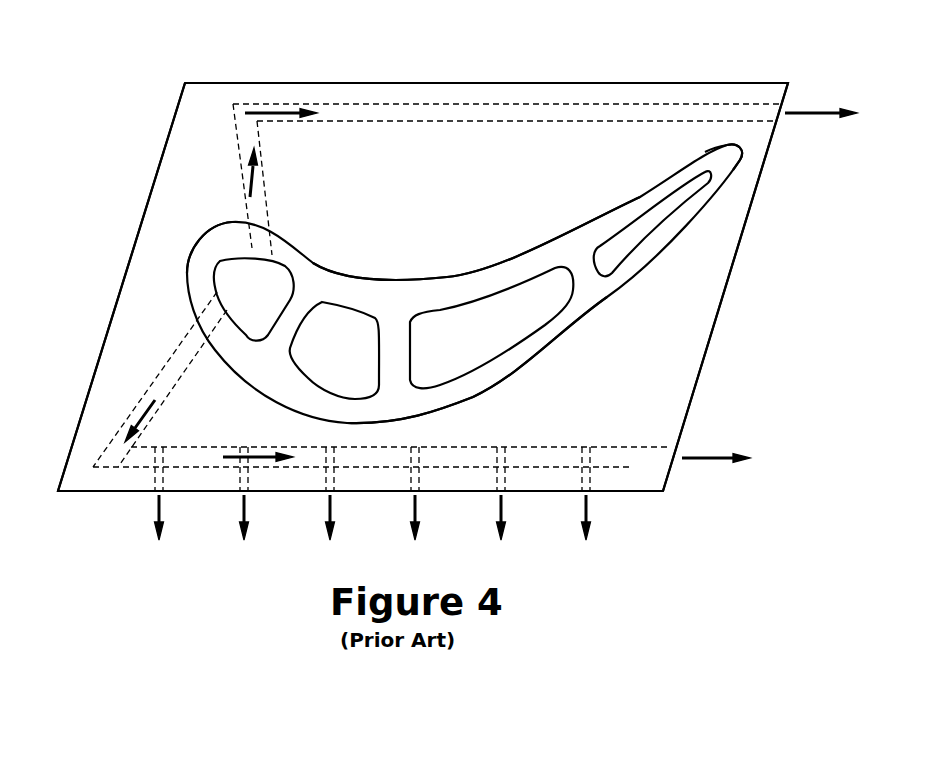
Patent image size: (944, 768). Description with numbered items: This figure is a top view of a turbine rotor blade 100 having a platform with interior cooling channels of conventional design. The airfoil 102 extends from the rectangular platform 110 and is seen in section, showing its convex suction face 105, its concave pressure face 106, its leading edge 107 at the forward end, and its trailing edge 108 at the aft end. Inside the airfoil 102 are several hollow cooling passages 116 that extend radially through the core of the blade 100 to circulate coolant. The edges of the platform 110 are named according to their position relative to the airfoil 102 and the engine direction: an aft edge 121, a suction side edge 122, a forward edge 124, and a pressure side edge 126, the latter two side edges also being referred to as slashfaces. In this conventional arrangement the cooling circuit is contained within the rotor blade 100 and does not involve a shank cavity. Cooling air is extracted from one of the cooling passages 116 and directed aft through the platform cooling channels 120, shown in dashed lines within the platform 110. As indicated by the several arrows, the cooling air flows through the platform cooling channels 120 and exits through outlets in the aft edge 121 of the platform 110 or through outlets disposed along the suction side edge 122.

The turbine rotor blade 100 is at (82, 83).
The airfoil 102 is at (160, 247).
The suction face 105 is at (453, 405).
The pressure face 106 is at (473, 273).
The leading edge 107 is at (187, 257).
The trailing edge 108 is at (738, 147).
The platform 110 is at (415, 179).
The cooling passages 116 is at (275, 300).
The platform cooling channels 120 is at (366, 104).
The aft edge 121 is at (713, 330).
The suction side edge 122 is at (102, 491).
The forward edge 124 is at (114, 308).
The pressure side edge 126 is at (687, 83).